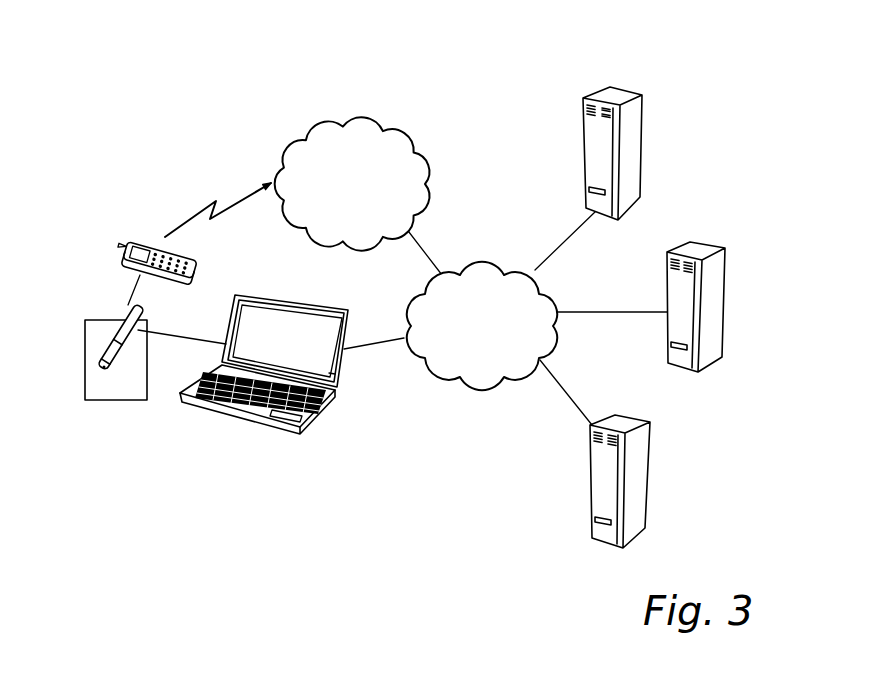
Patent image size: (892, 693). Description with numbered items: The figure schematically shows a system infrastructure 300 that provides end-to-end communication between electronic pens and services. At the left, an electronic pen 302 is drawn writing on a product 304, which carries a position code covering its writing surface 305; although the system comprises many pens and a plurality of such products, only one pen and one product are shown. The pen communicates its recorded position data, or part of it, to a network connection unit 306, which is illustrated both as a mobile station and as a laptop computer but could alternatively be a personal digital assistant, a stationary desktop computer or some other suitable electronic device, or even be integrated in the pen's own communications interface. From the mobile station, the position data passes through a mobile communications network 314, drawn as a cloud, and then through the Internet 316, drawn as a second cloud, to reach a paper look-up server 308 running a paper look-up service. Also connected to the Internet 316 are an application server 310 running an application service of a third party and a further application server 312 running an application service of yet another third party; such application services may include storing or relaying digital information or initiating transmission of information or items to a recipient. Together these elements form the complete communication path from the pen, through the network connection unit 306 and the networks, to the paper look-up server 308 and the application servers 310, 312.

The system infrastructure 300 is at (322, 452).
The electronic pen 302 is at (113, 333).
The product 304 is at (107, 402).
The writing surface 305 is at (113, 377).
The network connection unit 306 is at (263, 294).
The paper look-up server 308 is at (627, 160).
The application server 310 is at (705, 252).
The application server 312 is at (643, 445).
The mobile communications network 314 is at (300, 147).
The Internet 316 is at (477, 363).